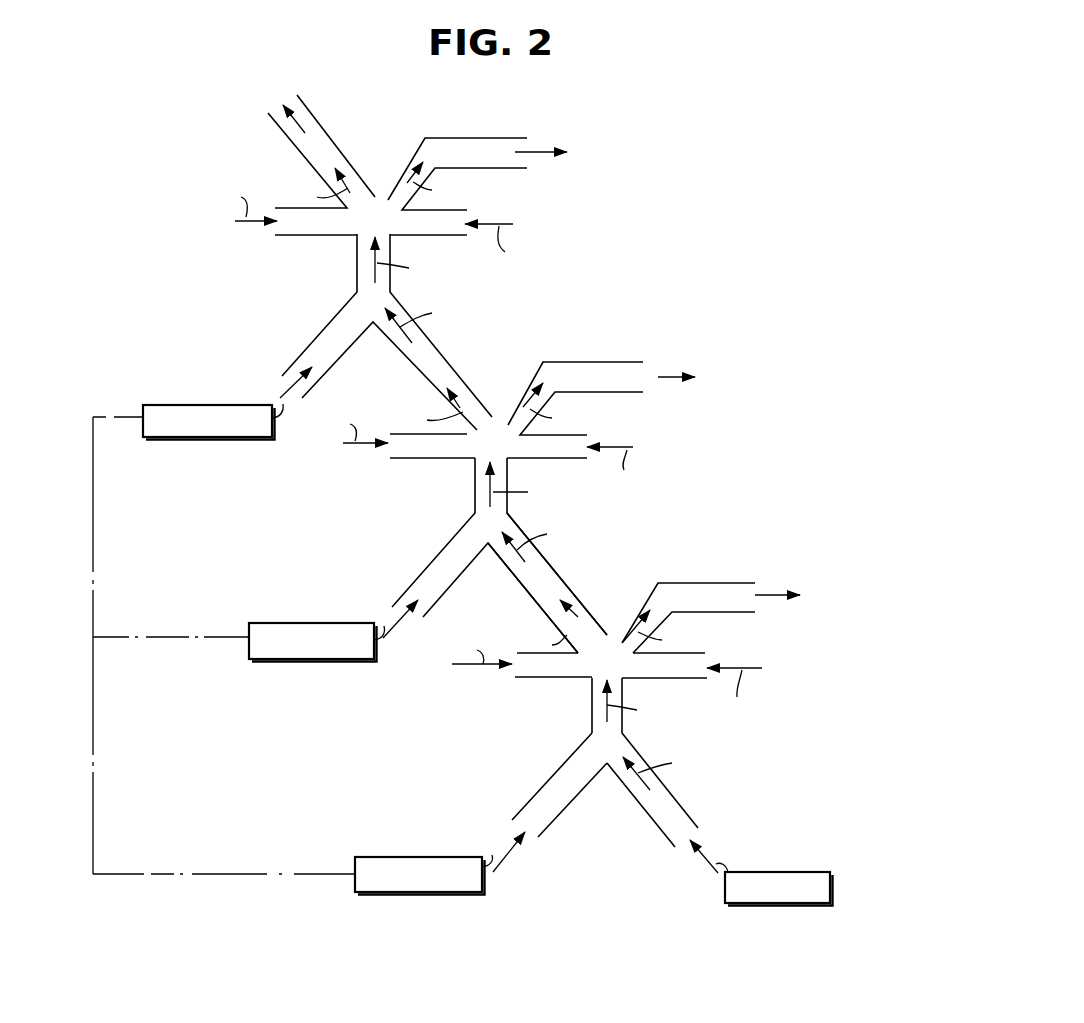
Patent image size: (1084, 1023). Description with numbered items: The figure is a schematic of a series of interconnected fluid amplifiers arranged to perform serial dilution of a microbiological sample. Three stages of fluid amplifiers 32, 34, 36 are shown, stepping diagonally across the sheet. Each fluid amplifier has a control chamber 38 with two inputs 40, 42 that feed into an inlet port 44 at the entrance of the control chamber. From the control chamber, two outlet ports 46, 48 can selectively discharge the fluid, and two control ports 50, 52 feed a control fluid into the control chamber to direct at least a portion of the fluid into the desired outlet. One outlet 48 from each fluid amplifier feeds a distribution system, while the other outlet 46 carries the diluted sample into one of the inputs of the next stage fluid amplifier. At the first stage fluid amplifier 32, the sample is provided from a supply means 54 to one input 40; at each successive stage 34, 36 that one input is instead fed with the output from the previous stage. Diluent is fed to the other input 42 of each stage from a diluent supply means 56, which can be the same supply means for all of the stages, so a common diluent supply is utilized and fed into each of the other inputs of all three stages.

The first stage fluid amplifier 32 is at (650, 709).
The second stage fluid amplifier 34 is at (425, 505).
The third stage fluid amplifier 36 is at (318, 275).
The control chamber 38 is at (623, 689).
The input 40 is at (697, 790).
The input 42 is at (548, 775).
The inlet port 44 is at (623, 725).
The outlet port 46 is at (593, 573).
The outlet port 48 is at (638, 603).
The control port 50 is at (557, 680).
The control port 52 is at (693, 653).
The sample supply means 54 is at (778, 870).
The diluent supply means 56 is at (418, 855).